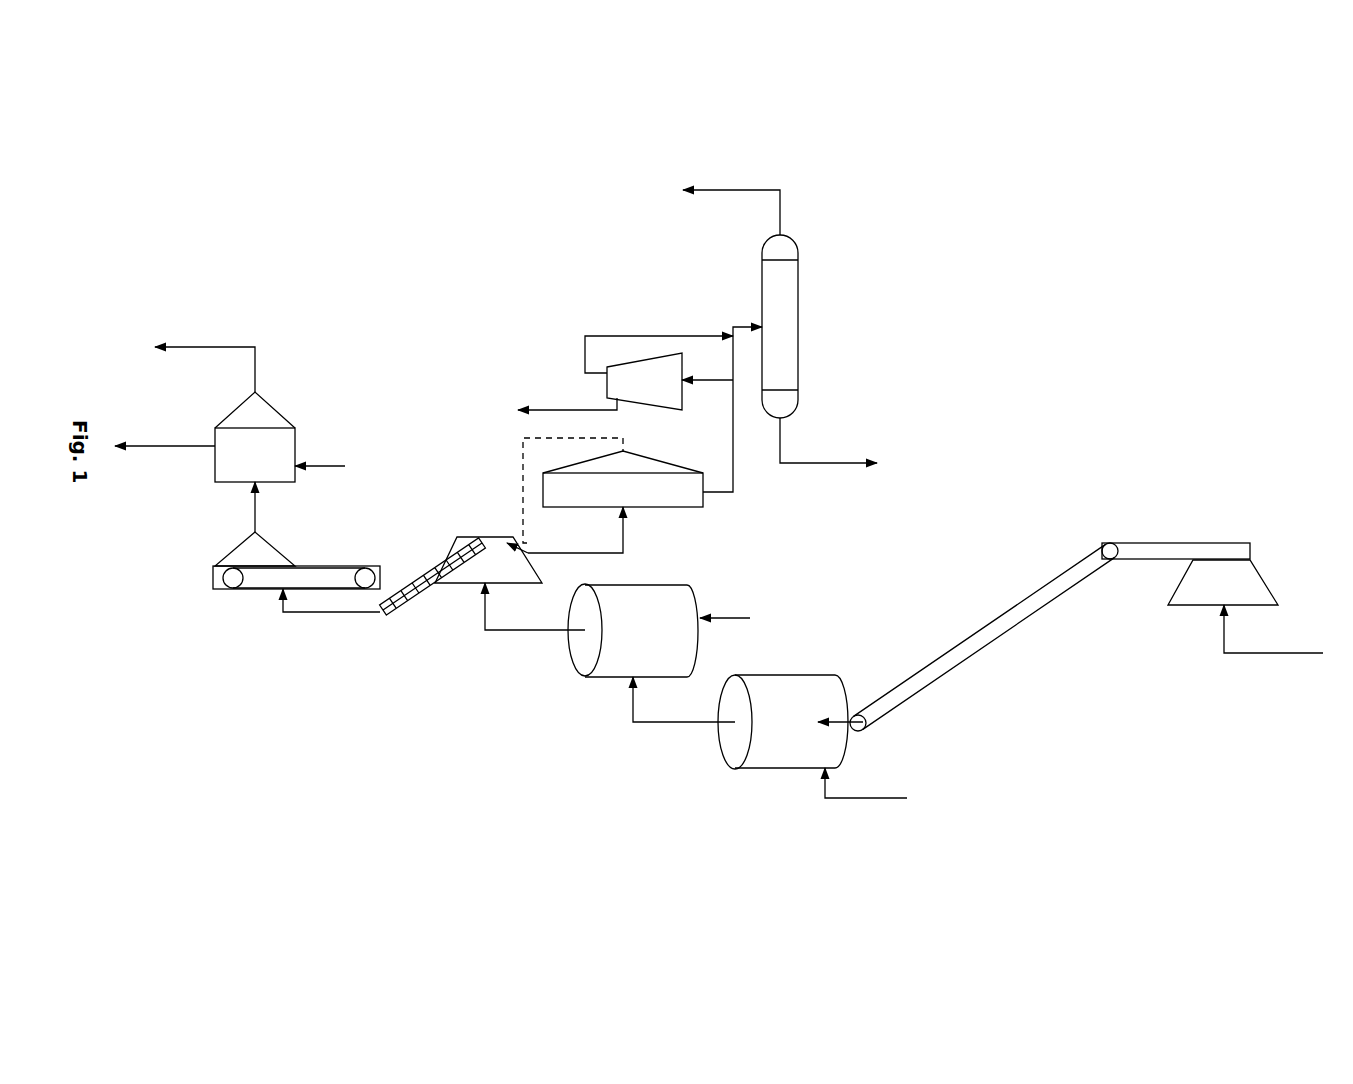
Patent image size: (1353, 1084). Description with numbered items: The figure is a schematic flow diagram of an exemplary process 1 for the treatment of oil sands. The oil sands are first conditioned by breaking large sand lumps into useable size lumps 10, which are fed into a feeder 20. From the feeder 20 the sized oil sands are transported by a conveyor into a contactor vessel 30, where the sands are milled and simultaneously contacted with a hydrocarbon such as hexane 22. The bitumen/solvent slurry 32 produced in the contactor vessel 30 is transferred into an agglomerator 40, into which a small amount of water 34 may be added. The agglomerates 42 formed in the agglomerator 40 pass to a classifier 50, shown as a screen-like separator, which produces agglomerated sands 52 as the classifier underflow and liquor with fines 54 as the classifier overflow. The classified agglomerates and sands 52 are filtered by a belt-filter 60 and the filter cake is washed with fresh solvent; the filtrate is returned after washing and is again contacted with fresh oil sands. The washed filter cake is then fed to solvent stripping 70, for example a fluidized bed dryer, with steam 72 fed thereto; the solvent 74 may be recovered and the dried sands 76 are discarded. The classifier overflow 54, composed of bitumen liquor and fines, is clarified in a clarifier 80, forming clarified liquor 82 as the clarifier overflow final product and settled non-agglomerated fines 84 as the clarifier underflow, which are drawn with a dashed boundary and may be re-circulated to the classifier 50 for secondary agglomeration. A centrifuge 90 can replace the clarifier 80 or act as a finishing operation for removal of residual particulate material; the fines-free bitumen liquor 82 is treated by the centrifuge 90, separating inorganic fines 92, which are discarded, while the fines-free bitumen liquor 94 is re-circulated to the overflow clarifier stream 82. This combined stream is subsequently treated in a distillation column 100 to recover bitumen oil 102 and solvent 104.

The process 1 is at (372, 722).
The useable size lumps 10 is at (1273, 640).
The feeder 20 is at (1270, 592).
The hexane 22 is at (866, 794).
The contactor vessel 30 is at (813, 675).
The bitumen/solvent slurry 32 is at (684, 711).
The water 34 is at (725, 628).
The agglomerator 40 is at (610, 677).
The agglomerates 42 is at (535, 618).
The classifier 50 is at (473, 535).
The agglomerated sands 52 is at (331, 610).
The liquor with fines 54 is at (565, 540).
The belt-filter 60 is at (227, 589).
The solvent stripping 70 is at (215, 482).
The steam 72 is at (320, 475).
The solvent 74 is at (165, 457).
The dried sands 76 is at (205, 367).
The clarifier 80 is at (667, 507).
The clarified liquor 82 is at (732, 420).
The settled non-agglomerated fines 84 is at (573, 490).
The centrifuge 90 is at (667, 395).
The inorganic fines 92 is at (567, 414).
The fines-free bitumen liquor 94 is at (659, 352).
The distillation column 100 is at (798, 290).
The bitumen oil 102 is at (731, 212).
The solvent 104 is at (828, 452).